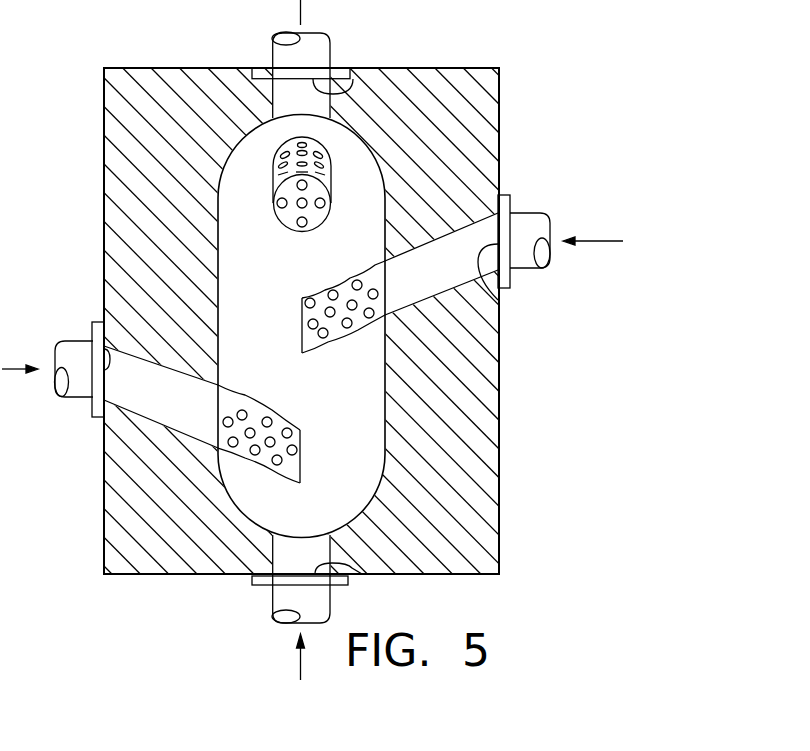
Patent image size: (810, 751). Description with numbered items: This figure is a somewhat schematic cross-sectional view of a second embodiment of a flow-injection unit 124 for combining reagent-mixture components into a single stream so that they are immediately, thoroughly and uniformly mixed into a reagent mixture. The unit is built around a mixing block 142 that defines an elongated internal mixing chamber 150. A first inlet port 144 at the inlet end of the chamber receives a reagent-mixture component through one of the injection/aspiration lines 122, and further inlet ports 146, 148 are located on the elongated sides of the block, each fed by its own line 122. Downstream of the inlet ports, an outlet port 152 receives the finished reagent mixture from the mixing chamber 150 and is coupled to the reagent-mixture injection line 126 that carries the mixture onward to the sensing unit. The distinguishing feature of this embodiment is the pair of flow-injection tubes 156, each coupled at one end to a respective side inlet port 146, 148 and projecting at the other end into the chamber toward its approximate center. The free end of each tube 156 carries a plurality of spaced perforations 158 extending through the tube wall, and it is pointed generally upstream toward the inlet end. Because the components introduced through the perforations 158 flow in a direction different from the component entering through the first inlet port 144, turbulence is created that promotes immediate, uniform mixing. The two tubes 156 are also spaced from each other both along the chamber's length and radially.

The injection/aspiration line 122 is at (80, 383).
The flow-injection unit 124 is at (527, 116).
The reagent-mixture injection line 126 is at (272, 53).
The mixing block 142 is at (115, 126).
The first inlet port 144 is at (348, 577).
The inlet port 146 is at (106, 344).
The inlet port 148 is at (491, 306).
The mixing chamber 150 is at (384, 393).
The outlet port 152 is at (350, 90).
The flow-injection tube 156 is at (273, 199).
The perforations 158 is at (314, 298).